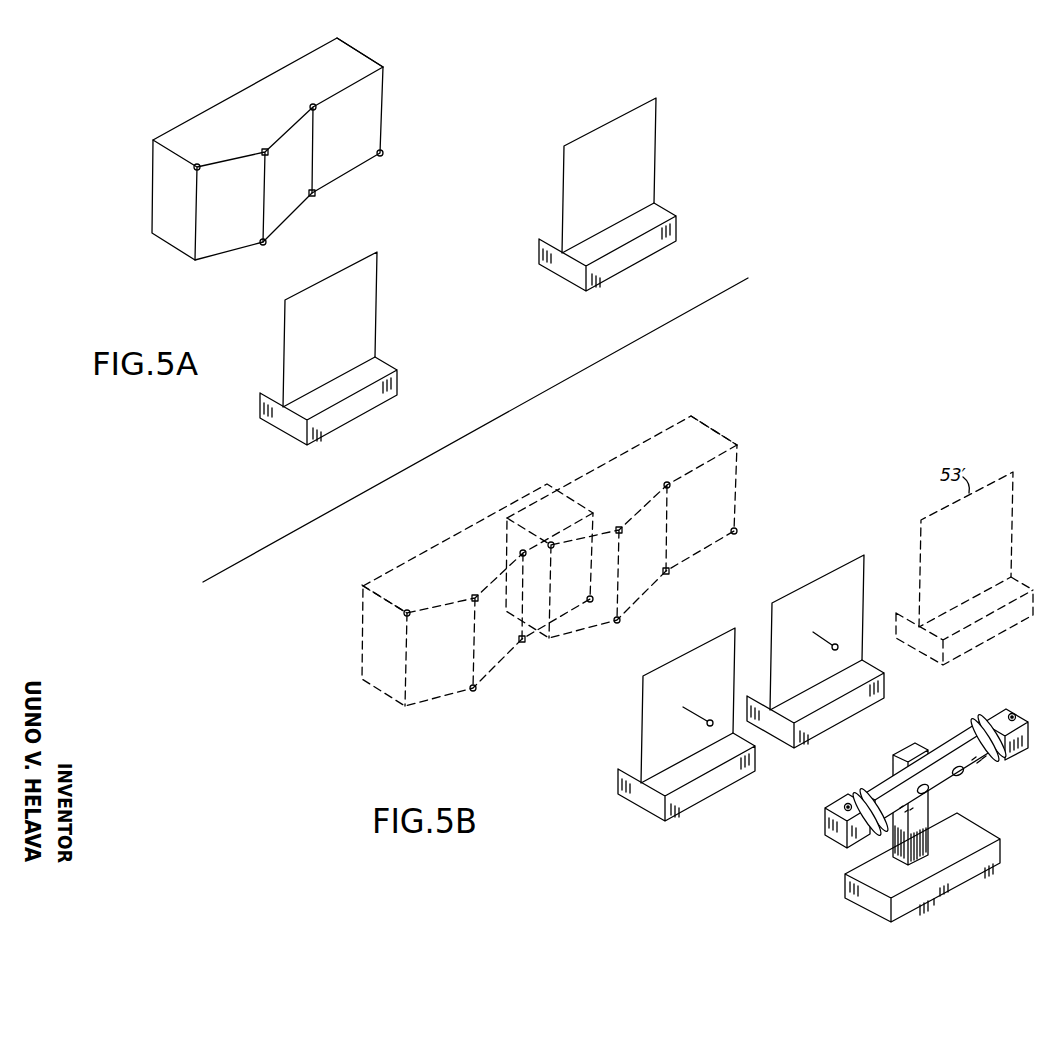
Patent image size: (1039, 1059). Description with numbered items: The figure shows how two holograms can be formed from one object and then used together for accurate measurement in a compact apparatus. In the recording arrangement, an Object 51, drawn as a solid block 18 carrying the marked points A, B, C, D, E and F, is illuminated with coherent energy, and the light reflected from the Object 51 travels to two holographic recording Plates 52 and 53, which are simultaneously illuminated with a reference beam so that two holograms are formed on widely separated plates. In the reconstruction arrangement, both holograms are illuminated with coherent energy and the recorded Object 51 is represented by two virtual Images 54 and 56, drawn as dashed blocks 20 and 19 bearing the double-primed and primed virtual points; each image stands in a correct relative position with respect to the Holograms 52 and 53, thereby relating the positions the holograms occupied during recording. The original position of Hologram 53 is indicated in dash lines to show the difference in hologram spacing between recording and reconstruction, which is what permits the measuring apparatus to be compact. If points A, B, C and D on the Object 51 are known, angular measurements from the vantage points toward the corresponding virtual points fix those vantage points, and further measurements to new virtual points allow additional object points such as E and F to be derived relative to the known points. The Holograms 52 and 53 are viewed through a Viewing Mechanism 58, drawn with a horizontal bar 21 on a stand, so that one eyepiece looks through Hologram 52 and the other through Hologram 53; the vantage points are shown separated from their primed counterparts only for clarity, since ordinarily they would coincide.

In FIG. 5A, the object model block 18 is at (247, 127).
In FIG. 5B, the projected model block image 19 is at (641, 482).
In FIG. 5B, the projected model block image 20 is at (460, 577).
In FIG. 5B, the reference bar 21 is at (947, 752).
In FIG. 5A, the object 51 is at (370, 60).
In FIG. 5A, the holographic recording plate 52 is at (378, 294).
In FIG. 5B, the holographic recording plate 52 is at (645, 730).
In FIG. 5A, the holographic recording plate 53 is at (655, 142).
In FIG. 5B, the holographic recording plate 53 is at (823, 586).
In FIG. 5B, the virtual image 54 is at (428, 550).
In FIG. 5B, the virtual image 56 is at (637, 447).
In FIG. 5B, the viewing mechanism 58 is at (834, 840).